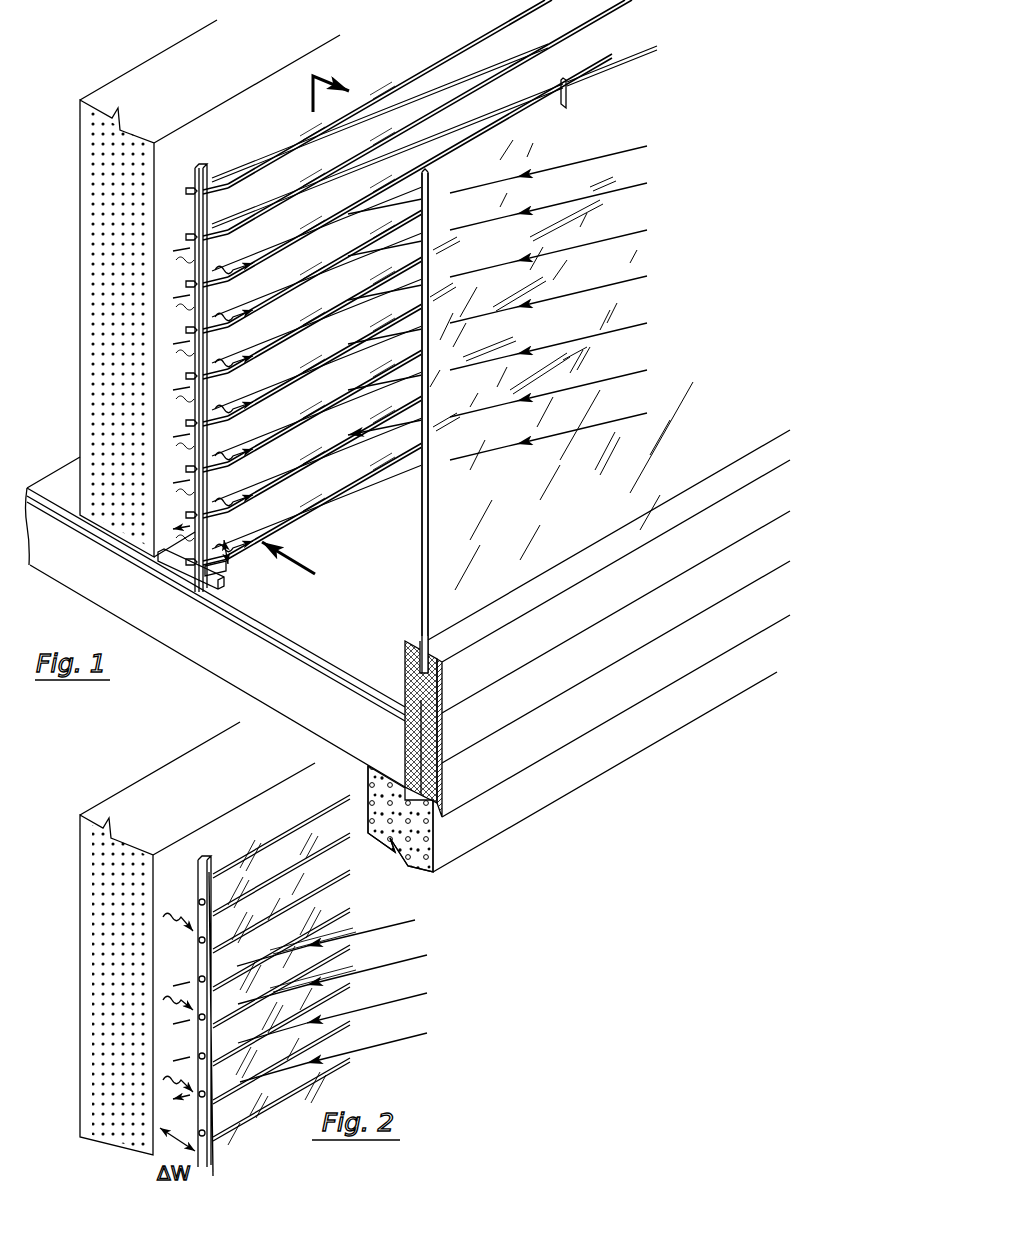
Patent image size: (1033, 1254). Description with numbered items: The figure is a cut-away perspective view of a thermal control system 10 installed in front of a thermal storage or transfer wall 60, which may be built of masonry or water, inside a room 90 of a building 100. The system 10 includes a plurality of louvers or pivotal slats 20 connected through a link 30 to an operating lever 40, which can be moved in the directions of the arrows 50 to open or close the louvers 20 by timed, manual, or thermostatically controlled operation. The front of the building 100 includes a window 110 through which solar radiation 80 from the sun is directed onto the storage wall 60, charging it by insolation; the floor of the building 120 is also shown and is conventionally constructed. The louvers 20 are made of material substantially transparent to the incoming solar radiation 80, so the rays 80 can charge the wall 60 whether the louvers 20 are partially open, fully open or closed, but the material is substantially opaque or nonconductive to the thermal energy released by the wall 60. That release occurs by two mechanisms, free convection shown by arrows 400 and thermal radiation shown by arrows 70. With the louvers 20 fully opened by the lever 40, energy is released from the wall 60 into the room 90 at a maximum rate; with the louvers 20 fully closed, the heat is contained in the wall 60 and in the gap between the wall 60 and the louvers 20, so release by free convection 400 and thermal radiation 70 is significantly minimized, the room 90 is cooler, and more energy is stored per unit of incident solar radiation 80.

In FIG. 1, the thermal control system 10 is at (471, 65).
In FIG. 1, the louvers 20 is at (269, 140).
In FIG. 2, the louvers 20 is at (214, 870).
In FIG. 1, the link 30 is at (210, 166).
In FIG. 1, the operating lever 40 is at (212, 592).
In FIG. 1, the arrows 50 is at (238, 568).
In FIG. 1, the thermal storage or transfer wall 60 is at (90, 284).
In FIG. 2, the thermal storage or transfer wall 60 is at (80, 938).
In FIG. 1, the thermal radiation 70 is at (233, 301).
In FIG. 2, the thermal radiation 70 is at (175, 1006).
In FIG. 1, the solar radiation 80 is at (606, 242).
In FIG. 2, the solar radiation 80 is at (415, 920).
In FIG. 1, the room 90 is at (362, 605).
In FIG. 1, the building 100 is at (487, 663).
In FIG. 1, the window 110 is at (419, 514).
In FIG. 1, the floor of the building 120 is at (304, 652).
In FIG. 1, the free convection 400 is at (324, 74).